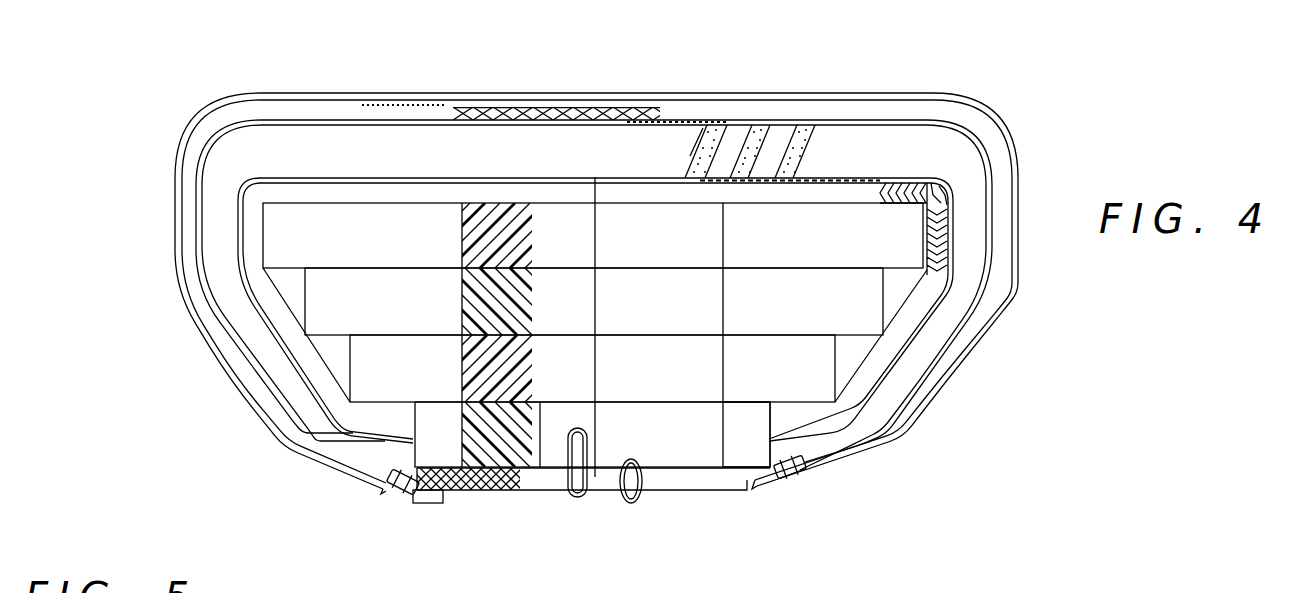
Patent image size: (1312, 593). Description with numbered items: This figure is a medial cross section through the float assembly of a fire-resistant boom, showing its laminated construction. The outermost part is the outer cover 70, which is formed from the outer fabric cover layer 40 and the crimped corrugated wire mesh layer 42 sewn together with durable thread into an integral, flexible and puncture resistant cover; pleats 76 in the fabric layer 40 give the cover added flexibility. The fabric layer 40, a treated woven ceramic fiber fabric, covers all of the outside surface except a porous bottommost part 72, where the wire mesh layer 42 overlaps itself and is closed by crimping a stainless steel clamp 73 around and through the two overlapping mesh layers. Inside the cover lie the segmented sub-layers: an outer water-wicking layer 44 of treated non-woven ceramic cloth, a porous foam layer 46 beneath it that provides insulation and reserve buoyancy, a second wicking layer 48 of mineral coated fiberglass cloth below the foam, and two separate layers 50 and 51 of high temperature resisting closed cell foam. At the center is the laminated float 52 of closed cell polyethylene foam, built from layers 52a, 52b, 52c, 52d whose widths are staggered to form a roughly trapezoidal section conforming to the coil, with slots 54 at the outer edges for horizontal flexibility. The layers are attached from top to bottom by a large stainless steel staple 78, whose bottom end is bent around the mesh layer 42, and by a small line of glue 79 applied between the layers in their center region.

The outer fabric cover layer 40 is at (370, 104).
The crimped corrugated wire mesh layer 42 is at (561, 107).
The outer water-wicking layer 44 is at (658, 119).
The porous foam layer 46 is at (750, 150).
The second wicking layer 48 is at (812, 178).
The closed cell foam layer 50 is at (922, 181).
The closed cell foam layer 51 is at (937, 248).
The laminated float 52 is at (528, 333).
The float layer 52a is at (775, 246).
The float layer 52b is at (760, 310).
The float layer 52c is at (751, 384).
The float layer 52d is at (636, 444).
The slots 54 is at (461, 224).
The outer cover 70 is at (602, 282).
The porous bottommost part 72 is at (611, 508).
The stainless steel clamp 73 is at (640, 504).
The pleats 76 is at (1013, 155).
The large staple 78 is at (577, 500).
The line of glue 79 is at (630, 397).